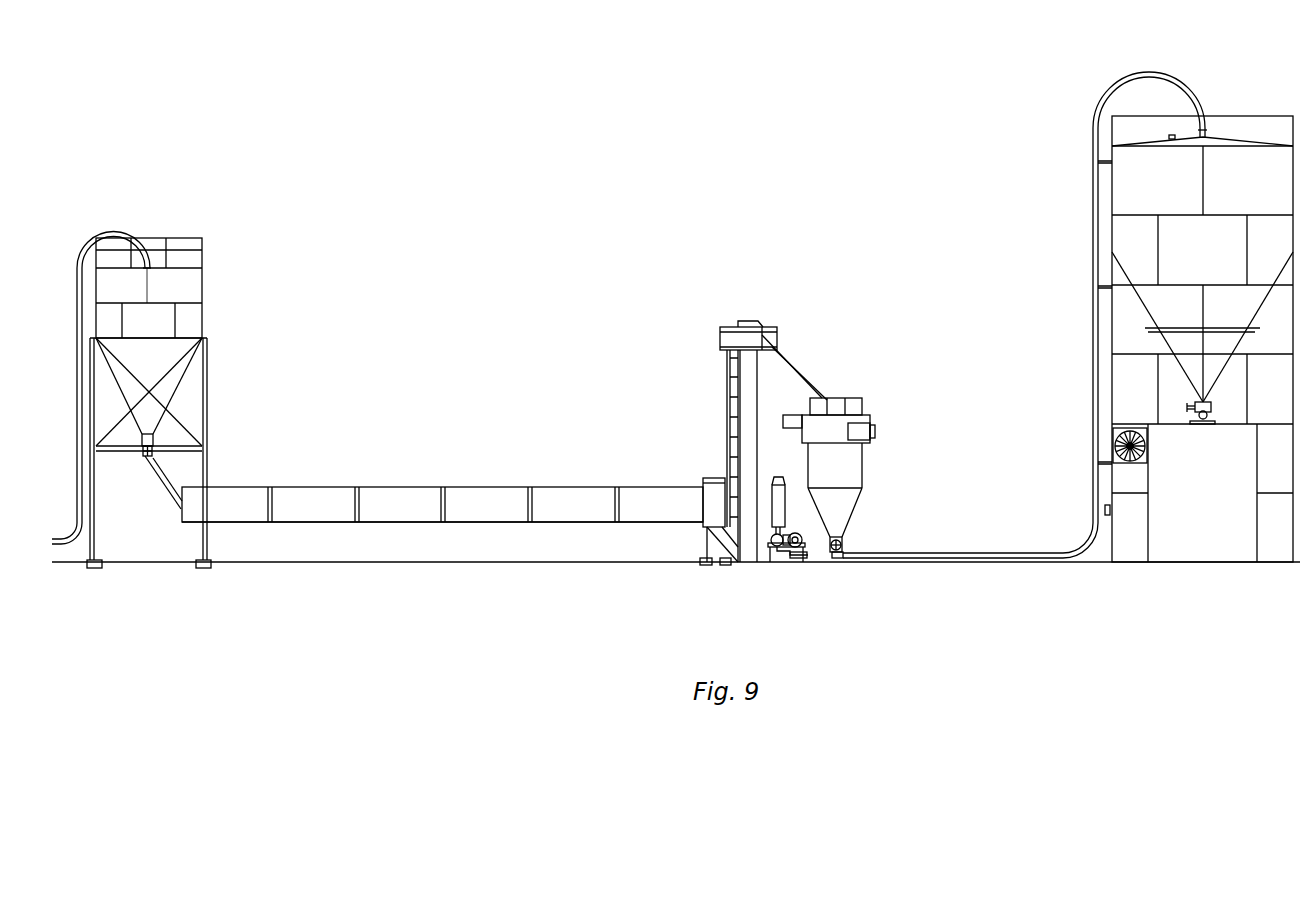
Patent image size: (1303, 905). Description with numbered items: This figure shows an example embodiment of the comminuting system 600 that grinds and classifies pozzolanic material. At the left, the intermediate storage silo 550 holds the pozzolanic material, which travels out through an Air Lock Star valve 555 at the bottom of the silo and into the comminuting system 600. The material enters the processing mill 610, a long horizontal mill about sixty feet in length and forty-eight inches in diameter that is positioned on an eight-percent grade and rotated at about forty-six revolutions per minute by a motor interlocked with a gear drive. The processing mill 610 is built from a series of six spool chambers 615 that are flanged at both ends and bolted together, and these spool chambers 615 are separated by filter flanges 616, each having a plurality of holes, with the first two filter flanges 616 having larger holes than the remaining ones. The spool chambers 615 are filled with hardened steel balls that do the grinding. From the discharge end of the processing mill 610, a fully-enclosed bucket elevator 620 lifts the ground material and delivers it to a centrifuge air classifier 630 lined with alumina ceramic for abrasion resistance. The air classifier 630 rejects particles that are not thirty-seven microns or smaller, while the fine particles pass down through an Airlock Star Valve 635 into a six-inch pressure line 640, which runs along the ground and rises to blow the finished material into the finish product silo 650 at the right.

The intermediate storage silo 550 is at (148, 228).
The Air Lock Star valve 555 is at (155, 453).
The comminuting system 600 is at (603, 160).
The processing mill 610 is at (450, 410).
The spool chambers 615 is at (242, 523).
The filter flanges 616 is at (270, 490).
The bucket elevator 620 is at (728, 310).
The air classifier 630 is at (837, 394).
The Airlock Star Valve 635 is at (842, 543).
The pressure line 640 is at (985, 553).
The finish product silo 650 is at (1215, 100).